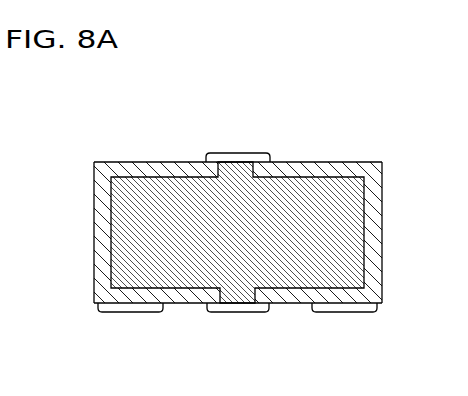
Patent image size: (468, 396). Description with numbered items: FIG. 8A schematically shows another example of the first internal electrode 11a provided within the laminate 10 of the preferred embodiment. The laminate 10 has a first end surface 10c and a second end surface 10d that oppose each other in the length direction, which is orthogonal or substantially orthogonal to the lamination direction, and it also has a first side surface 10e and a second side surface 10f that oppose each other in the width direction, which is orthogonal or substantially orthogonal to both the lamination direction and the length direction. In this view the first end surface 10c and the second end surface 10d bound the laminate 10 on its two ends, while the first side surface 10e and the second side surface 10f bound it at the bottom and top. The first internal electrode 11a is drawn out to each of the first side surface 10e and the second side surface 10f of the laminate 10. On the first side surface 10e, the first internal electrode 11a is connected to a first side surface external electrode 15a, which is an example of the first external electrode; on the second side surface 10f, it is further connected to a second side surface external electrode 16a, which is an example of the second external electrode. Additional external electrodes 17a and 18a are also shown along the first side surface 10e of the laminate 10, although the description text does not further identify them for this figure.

The laminate 10 is at (234, 227).
The first end surface 10c is at (93, 256).
The second end surface 10d is at (384, 263).
The first side surface 10e is at (178, 303).
The second side surface 10f is at (164, 161).
The first internal electrode 11a is at (278, 272).
The first side surface external electrode 15a is at (232, 312).
The second side surface external electrode 16a is at (232, 153).
The second terminal electrode 17a is at (113, 312).
The third terminal electrode 18a is at (357, 310).